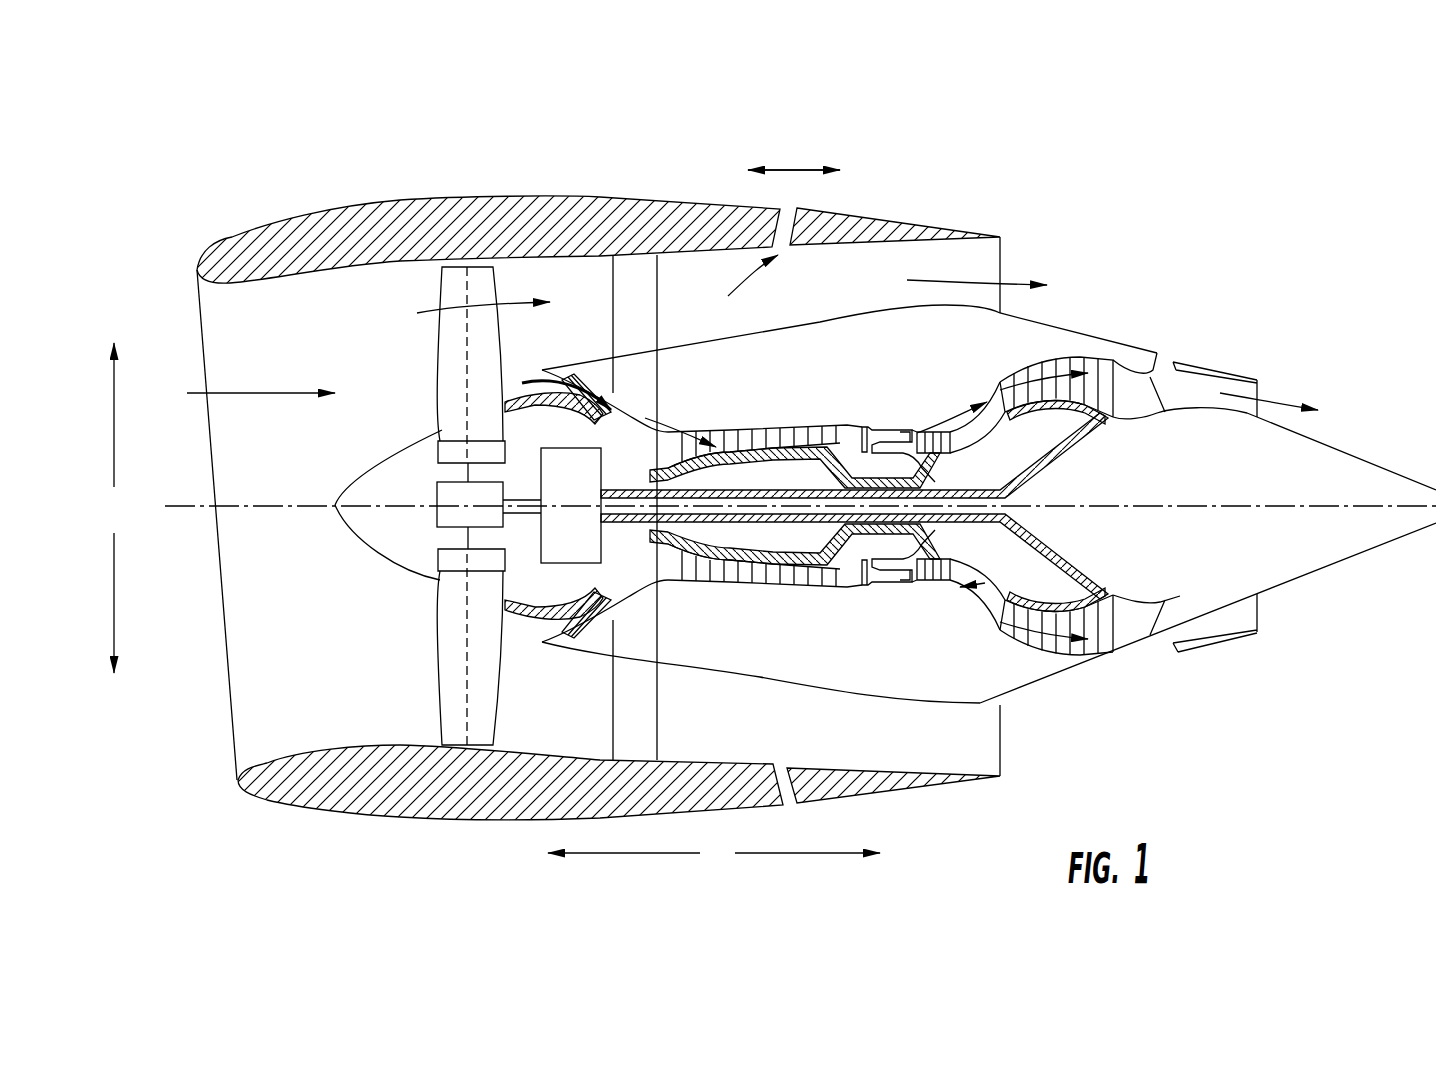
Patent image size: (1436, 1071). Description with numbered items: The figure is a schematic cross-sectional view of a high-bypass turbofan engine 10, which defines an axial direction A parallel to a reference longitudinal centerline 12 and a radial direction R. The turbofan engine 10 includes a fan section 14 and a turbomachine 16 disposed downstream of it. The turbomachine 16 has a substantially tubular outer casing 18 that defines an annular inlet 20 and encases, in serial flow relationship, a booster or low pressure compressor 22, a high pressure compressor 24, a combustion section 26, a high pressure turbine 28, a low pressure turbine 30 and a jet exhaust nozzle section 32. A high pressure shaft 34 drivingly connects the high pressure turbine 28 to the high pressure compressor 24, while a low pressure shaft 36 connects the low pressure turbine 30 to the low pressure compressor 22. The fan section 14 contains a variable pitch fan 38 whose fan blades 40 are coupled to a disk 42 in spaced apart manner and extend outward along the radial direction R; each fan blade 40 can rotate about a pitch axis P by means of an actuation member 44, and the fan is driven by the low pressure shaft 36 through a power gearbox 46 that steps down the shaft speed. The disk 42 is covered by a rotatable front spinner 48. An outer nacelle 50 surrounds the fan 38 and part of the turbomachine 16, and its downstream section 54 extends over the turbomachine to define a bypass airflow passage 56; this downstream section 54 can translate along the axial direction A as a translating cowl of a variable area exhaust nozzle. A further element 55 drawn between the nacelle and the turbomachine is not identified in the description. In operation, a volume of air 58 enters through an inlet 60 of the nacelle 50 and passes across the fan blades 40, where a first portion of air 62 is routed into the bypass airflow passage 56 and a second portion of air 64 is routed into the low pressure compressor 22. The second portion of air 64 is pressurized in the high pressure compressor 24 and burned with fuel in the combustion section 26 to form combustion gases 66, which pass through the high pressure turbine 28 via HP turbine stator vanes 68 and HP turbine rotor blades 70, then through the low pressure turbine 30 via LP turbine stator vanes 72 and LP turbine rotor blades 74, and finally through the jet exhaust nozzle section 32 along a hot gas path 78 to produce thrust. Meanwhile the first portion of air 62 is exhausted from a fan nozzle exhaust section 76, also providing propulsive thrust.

The turbofan engine 10 is at (1167, 213).
The longitudinal centerline 12 is at (1190, 504).
The fan section 14 is at (350, 295).
The turbomachine 16 is at (827, 390).
The outer casing 18 is at (840, 700).
The annular inlet 20 is at (560, 626).
The low pressure compressor 22 is at (603, 602).
The high pressure compressor 24 is at (690, 572).
The combustion section 26 is at (885, 590).
The high pressure turbine 28 is at (980, 587).
The low pressure turbine 30 is at (1095, 652).
The jet exhaust nozzle section 32 is at (1169, 620).
The high pressure shaft 34 is at (922, 458).
The low pressure shaft 36 is at (1043, 457).
The fan 38 is at (400, 567).
The fan blades 40 is at (436, 678).
The disk 42 is at (457, 453).
The actuation member 44 is at (413, 480).
The power gearbox 46 is at (598, 458).
The front spinner 48 is at (347, 527).
The outer nacelle 50 is at (490, 818).
The downstream section 54 is at (936, 225).
The nacelle support strut 55 is at (657, 293).
The bypass airflow passage 56 is at (812, 295).
The volume of air 58 is at (257, 393).
The inlet 60 is at (228, 750).
The first portion of air 62 is at (463, 287).
The second portion of air 64 is at (523, 383).
The combustion gases 66 is at (1050, 367).
The HP turbine stator vanes 68 is at (905, 587).
The HP turbine rotor blades 70 is at (927, 570).
The LP turbine stator vanes 72 is at (1000, 647).
The LP turbine rotor blades 74 is at (1023, 640).
The fan nozzle exhaust section 76 is at (987, 265).
The hot gas path 78 is at (980, 397).
The pitch axis P is at (470, 288).
The axial direction A is at (714, 853).
The radial direction R is at (114, 508).